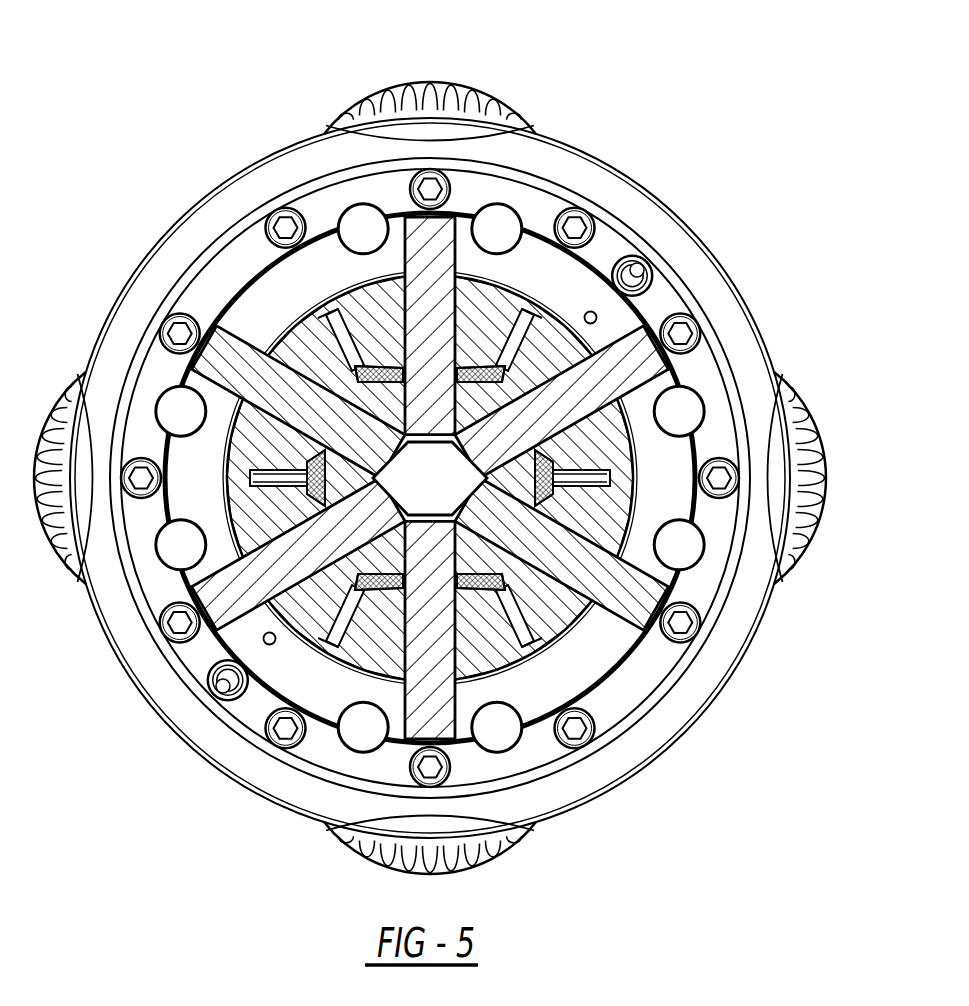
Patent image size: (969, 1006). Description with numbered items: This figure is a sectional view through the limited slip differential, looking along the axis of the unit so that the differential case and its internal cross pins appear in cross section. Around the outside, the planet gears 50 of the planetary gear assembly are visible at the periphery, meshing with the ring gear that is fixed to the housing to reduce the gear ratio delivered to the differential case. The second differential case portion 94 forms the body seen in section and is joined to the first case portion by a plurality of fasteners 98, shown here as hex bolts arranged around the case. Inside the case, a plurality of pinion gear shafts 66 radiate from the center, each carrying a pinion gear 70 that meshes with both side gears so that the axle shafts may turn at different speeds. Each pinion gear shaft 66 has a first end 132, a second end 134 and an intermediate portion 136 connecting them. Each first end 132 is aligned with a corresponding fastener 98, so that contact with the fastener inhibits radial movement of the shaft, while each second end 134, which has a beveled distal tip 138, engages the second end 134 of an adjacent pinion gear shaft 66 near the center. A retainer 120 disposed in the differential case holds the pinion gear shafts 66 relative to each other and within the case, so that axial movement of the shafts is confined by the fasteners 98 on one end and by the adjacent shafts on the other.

The planet gears 50 is at (442, 85).
The pinion gear shafts 66 is at (585, 188).
The pinion gears 70 is at (307, 350).
The second differential case portion 94 is at (385, 185).
The fasteners 98 is at (435, 188).
The retainer 120 is at (205, 545).
The first end 132 is at (480, 210).
The second end 134 is at (567, 352).
The intermediate portion 136 is at (440, 297).
The beveled distal tip 138 is at (603, 520).